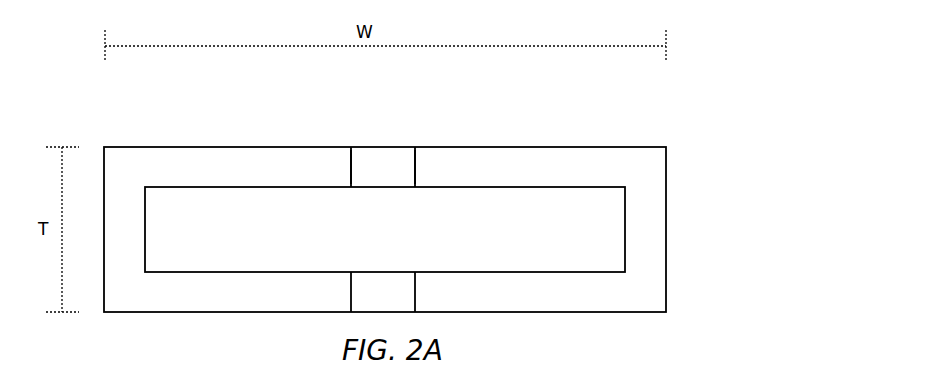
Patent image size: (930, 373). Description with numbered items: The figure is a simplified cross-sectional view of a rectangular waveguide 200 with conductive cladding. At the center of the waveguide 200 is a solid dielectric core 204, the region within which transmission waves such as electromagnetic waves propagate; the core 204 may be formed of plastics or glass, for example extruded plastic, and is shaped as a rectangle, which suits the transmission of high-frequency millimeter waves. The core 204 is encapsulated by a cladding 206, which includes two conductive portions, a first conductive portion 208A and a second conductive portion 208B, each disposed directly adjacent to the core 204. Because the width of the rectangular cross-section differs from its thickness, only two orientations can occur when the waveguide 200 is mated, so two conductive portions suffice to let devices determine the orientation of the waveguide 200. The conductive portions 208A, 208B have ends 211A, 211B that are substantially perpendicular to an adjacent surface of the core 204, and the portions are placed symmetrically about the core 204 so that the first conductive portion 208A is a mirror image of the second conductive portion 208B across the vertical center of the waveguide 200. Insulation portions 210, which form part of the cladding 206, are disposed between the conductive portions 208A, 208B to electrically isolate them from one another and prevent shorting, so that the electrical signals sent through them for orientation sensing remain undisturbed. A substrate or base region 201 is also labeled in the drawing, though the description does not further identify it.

The waveguide 200 is at (133, 117).
The substrate 201 is at (108, 372).
The solid dielectric core 204 is at (402, 243).
The cladding 206 is at (667, 182).
The first conductive portion 208A is at (242, 160).
The second conductive portion 208B is at (552, 160).
The insulation portions 210 is at (387, 168).
The end of first conductive portion 211A is at (352, 162).
The end of second conductive portion 211B is at (417, 162).